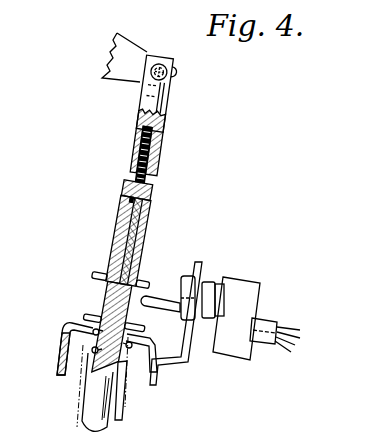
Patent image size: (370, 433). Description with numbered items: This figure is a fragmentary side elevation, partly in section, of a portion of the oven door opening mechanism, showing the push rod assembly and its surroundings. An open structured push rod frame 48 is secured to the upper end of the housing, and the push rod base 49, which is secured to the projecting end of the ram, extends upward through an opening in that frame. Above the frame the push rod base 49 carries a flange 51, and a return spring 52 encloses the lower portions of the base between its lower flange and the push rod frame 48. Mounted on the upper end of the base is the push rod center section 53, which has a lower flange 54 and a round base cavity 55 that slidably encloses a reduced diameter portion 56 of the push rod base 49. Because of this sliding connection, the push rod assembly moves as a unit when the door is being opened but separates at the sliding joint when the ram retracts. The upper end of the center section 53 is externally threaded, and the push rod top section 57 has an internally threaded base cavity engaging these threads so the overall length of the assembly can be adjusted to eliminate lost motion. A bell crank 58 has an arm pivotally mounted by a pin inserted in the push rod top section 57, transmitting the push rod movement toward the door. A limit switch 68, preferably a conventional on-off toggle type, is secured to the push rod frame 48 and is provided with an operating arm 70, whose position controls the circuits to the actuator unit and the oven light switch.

The push rod frame 48 is at (58, 368).
The push rod base 49 is at (107, 300).
The flange 51 is at (84, 317).
The return spring 52 is at (90, 338).
The push rod center section 53 is at (120, 234).
The lower flange 54 is at (91, 275).
The round base cavity 55 is at (152, 197).
The reduced diameter portion 56 is at (145, 230).
The push rod top section 57 is at (166, 134).
The bell crank 58 is at (118, 82).
The limit switch 68 is at (249, 309).
The operating arm 70 is at (163, 297).